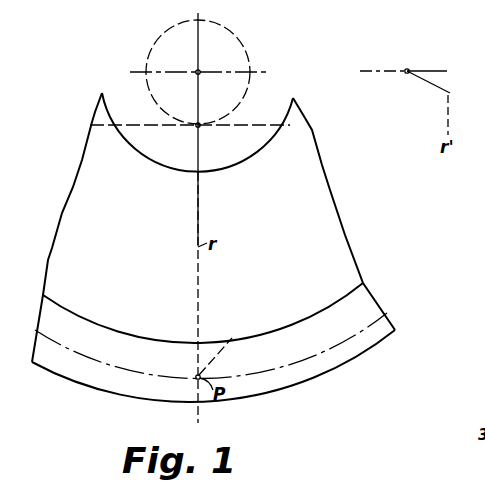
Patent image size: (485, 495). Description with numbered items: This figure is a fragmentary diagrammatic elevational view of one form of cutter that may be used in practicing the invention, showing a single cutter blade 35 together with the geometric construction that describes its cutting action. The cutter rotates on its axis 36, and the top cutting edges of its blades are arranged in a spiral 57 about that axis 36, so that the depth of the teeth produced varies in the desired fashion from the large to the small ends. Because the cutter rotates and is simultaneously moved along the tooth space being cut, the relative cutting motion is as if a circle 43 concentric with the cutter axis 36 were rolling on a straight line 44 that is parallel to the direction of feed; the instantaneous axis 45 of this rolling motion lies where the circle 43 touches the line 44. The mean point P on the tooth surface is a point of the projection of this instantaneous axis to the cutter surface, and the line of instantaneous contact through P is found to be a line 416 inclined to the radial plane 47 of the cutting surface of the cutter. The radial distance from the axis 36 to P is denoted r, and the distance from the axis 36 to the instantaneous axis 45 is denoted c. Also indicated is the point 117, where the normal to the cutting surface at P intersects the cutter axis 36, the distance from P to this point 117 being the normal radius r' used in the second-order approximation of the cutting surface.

The cutter blade segment 35 is at (322, 205).
The spiral 57 is at (338, 368).
The circle 43 is at (250, 56).
The cutter axis 36 is at (200, 70).
The point of intersection of the normal with the cutter axis 117 is at (407, 73).
The straight line 44 is at (258, 125).
The instantaneous axis 45 is at (200, 127).
The radial plane of the cutting surface 47 is at (198, 222).
The radius line from point P 416 is at (226, 350).